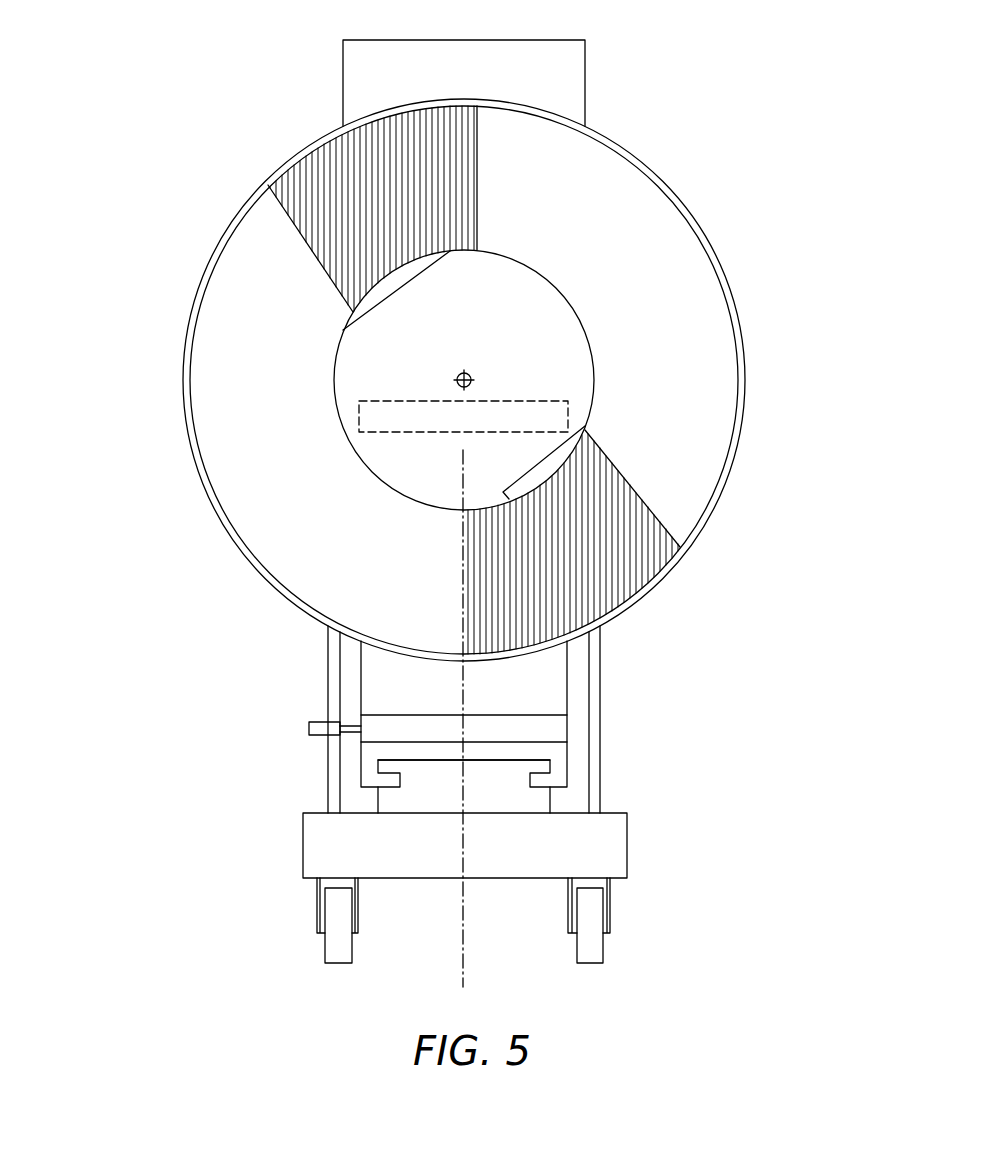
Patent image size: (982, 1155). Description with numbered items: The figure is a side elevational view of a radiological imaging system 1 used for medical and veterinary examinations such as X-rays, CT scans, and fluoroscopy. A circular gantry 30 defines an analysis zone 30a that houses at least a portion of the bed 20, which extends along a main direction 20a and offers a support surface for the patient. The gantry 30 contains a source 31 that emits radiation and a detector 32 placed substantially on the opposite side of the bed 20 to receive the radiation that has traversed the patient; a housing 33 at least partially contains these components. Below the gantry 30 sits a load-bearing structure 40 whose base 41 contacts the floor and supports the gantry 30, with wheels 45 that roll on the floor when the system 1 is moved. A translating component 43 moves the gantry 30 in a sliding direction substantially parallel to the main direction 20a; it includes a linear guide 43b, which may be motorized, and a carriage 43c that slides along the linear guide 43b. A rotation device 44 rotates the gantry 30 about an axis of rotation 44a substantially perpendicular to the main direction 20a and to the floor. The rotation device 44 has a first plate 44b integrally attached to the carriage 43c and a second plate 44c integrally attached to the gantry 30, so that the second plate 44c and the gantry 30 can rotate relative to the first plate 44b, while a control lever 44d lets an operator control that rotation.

The radiological imaging system 1 is at (198, 637).
The bed 20 is at (360, 418).
The main direction 20a is at (470, 368).
The gantry 30 is at (722, 237).
The analysis zone 30a is at (521, 318).
The source 31 is at (410, 275).
The detector 32 is at (584, 426).
The housing 33 is at (187, 341).
The load-bearing structure 40 is at (682, 753).
The base 41 is at (403, 861).
The translating component 43 is at (353, 755).
The linear guide 43b is at (502, 793).
The carriage 43c is at (558, 768).
The rotation device 44 is at (610, 687).
The axis of rotation 44a is at (467, 952).
The first plate 44b is at (553, 726).
The second plate 44c is at (378, 679).
The control lever 44d is at (320, 728).
The wheels 45 is at (342, 938).